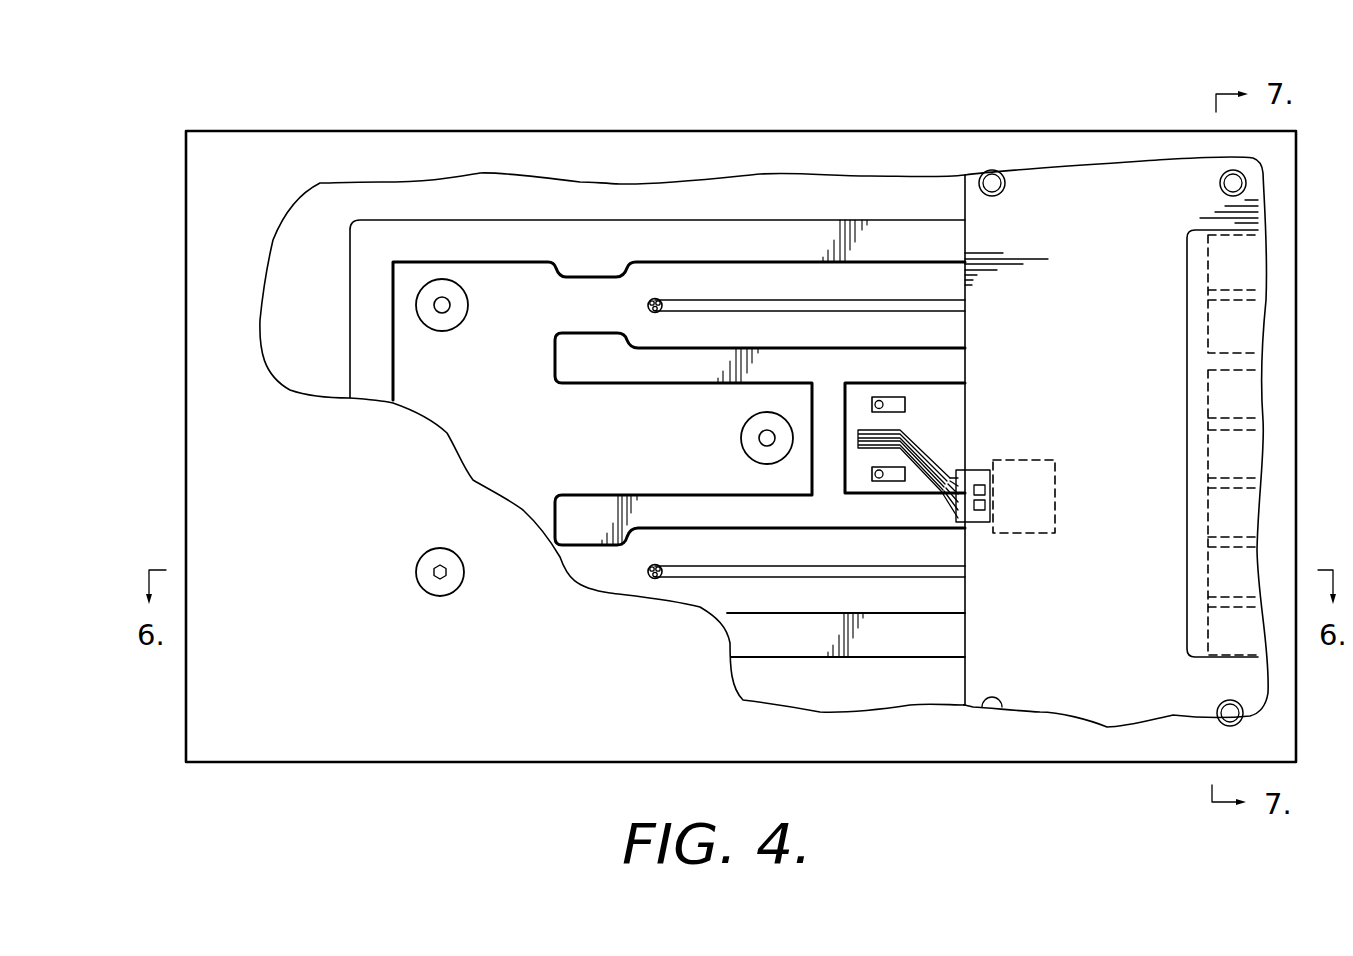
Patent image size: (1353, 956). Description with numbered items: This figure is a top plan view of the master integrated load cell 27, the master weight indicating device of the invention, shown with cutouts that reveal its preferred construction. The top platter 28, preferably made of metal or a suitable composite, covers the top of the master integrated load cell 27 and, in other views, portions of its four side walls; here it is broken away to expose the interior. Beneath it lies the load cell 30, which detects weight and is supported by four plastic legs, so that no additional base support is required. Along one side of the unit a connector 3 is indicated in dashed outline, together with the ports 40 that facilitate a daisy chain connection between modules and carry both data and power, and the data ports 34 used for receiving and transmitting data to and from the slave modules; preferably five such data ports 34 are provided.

The master integrated load cell 27 is at (240, 100).
The top platter 28 is at (330, 674).
The load cell 30 is at (722, 234).
The connector 3 is at (1021, 470).
The data ports 34 is at (1217, 406).
The ports 40 is at (1207, 264).